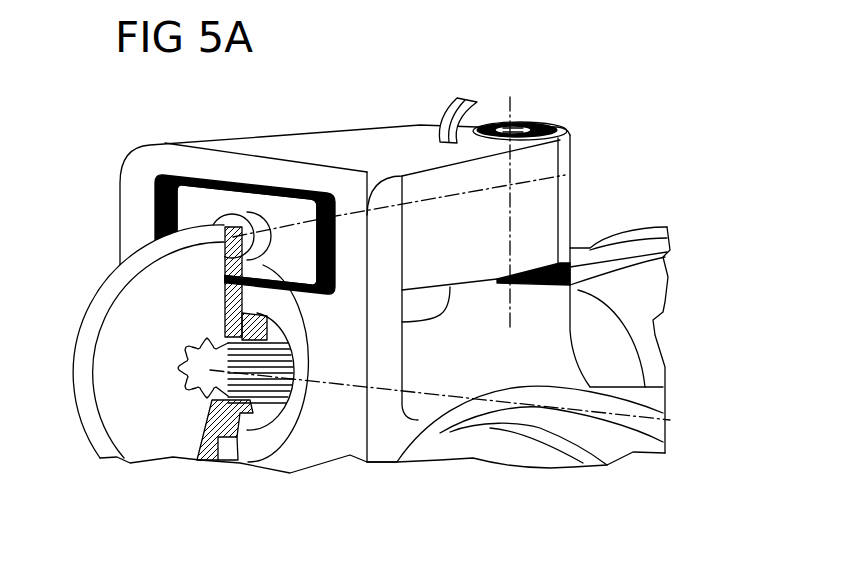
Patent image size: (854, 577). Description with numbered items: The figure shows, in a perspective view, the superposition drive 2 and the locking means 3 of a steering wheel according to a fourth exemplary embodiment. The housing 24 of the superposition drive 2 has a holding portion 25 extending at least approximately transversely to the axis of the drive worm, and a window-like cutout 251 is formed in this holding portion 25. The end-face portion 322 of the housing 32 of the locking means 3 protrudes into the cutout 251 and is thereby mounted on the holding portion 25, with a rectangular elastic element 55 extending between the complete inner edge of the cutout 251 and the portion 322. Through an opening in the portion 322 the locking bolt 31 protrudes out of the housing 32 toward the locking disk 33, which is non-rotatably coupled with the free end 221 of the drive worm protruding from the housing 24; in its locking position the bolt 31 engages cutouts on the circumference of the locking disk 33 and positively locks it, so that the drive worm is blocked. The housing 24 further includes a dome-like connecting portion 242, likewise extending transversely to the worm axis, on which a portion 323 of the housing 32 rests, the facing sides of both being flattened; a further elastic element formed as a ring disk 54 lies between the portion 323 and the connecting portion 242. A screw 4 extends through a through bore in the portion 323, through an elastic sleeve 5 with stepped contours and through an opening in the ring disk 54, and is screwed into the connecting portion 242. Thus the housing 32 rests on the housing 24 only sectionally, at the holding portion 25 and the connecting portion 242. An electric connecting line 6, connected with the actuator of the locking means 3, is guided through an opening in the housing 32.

The superposition drive 2 is at (470, 484).
The locking means 3 is at (432, 120).
The screw 4 is at (527, 125).
The elastic sleeve 5 is at (557, 130).
The electric connecting line 6 is at (473, 102).
The housing 24 is at (563, 362).
The connecting portion 242 is at (560, 295).
The holding portion 25 is at (385, 300).
The window-like cutout 251 is at (160, 180).
The locking bolt 31 is at (243, 220).
The housing 32 is at (392, 143).
The end-face portion 322 is at (198, 207).
The portion 323 is at (560, 187).
The locking disk 33 is at (127, 328).
The ring disk 54 is at (600, 245).
The elastic element 55 is at (322, 200).
The free end 221 is at (248, 392).